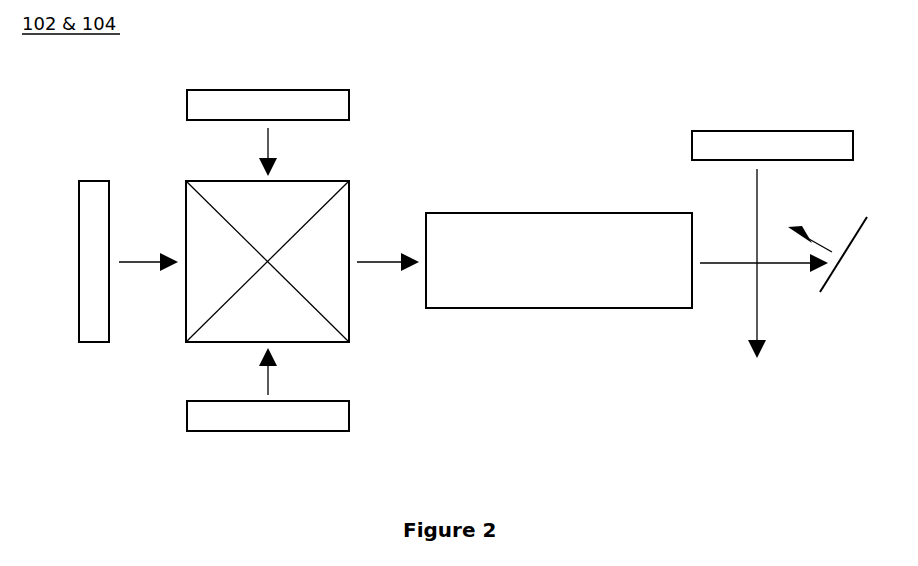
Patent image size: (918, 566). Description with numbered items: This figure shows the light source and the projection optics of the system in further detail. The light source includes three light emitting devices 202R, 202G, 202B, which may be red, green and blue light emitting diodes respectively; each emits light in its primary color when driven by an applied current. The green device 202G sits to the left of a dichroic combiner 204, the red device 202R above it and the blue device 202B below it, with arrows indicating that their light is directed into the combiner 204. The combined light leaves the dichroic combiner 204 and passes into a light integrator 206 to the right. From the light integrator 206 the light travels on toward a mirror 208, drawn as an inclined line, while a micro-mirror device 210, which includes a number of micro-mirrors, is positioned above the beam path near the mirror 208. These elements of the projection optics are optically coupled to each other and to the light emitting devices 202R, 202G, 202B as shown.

The light emitting device 202R is at (349, 108).
The light emitting device 202G is at (95, 342).
The light emitting device 202B is at (237, 431).
The dichroic combiner 204 is at (323, 342).
The light integrator 206 is at (523, 308).
The mirror 208 is at (833, 287).
The micro-mirror device 210 is at (802, 131).